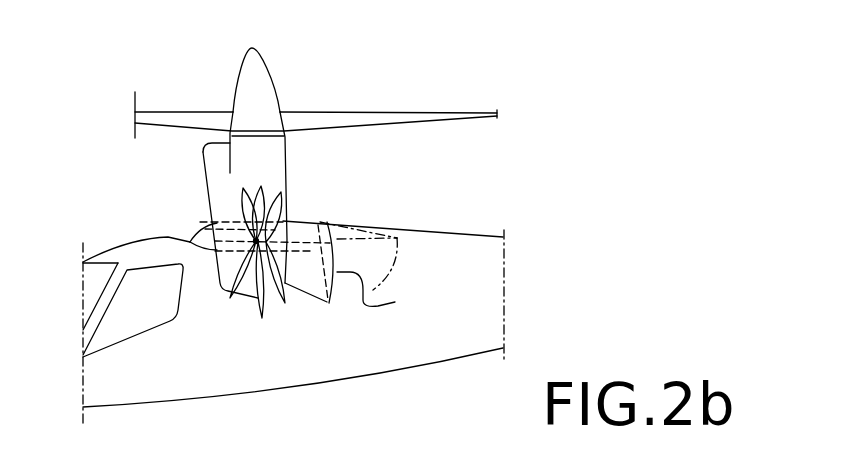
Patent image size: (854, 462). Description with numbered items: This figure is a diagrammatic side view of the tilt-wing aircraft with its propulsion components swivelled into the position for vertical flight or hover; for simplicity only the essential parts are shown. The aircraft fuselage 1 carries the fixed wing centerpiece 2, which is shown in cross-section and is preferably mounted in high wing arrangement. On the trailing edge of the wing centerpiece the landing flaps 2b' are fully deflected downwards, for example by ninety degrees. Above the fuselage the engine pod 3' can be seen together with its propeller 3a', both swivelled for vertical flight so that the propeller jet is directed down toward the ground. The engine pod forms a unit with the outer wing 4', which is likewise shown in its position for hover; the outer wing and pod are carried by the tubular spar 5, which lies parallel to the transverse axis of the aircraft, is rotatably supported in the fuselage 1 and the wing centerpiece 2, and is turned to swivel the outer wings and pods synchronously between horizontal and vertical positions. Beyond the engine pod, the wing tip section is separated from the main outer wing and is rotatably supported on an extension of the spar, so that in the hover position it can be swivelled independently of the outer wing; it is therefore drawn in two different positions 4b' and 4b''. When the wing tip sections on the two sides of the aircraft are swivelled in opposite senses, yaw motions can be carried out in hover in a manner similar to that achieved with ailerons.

The aircraft fuselage 1 is at (442, 350).
The fixed wing centerpiece 2 is at (307, 218).
The landing flaps 2b' is at (391, 272).
The engine pod 3' is at (276, 162).
The propeller 3a' is at (316, 103).
The outer wing 4' is at (288, 260).
The wing tip section 4b' is at (305, 297).
The wing tip section 4b'' is at (219, 295).
The tubular spar 5 is at (253, 240).